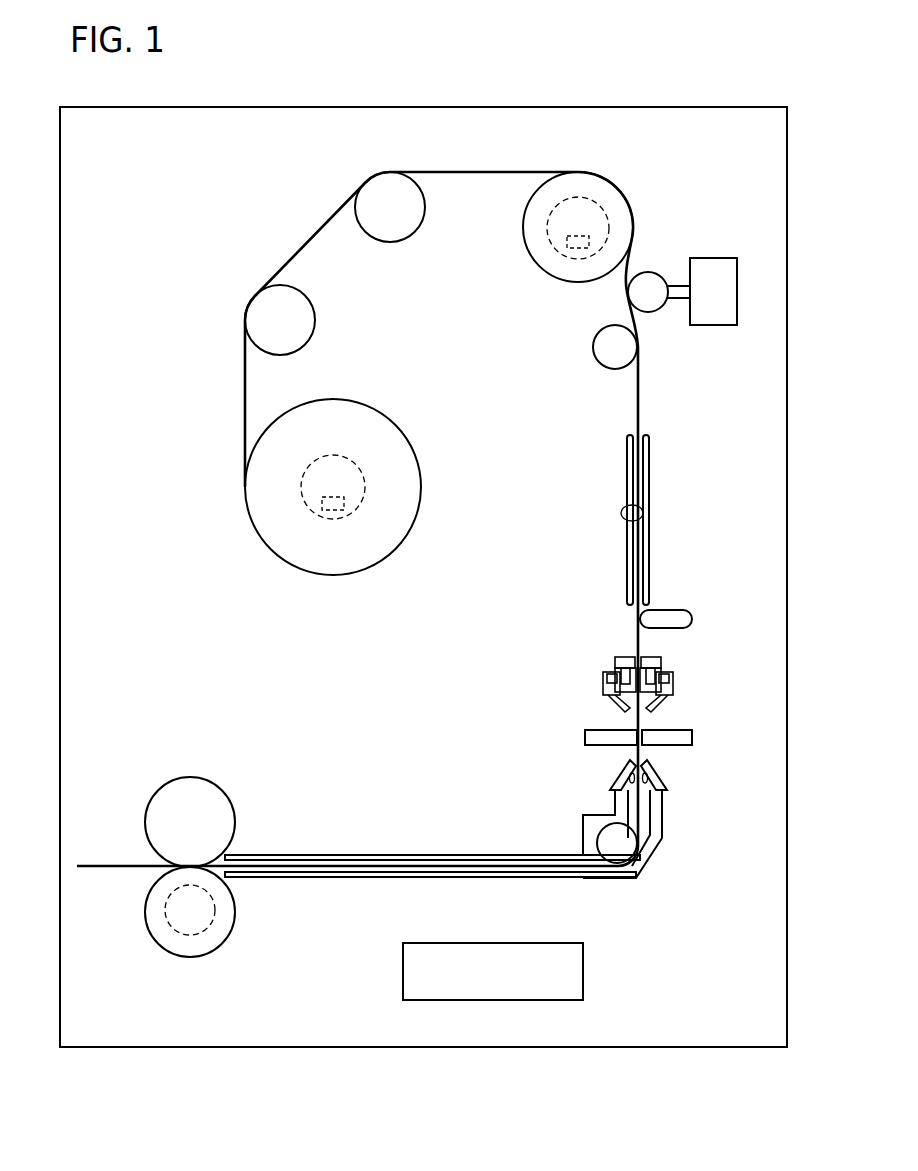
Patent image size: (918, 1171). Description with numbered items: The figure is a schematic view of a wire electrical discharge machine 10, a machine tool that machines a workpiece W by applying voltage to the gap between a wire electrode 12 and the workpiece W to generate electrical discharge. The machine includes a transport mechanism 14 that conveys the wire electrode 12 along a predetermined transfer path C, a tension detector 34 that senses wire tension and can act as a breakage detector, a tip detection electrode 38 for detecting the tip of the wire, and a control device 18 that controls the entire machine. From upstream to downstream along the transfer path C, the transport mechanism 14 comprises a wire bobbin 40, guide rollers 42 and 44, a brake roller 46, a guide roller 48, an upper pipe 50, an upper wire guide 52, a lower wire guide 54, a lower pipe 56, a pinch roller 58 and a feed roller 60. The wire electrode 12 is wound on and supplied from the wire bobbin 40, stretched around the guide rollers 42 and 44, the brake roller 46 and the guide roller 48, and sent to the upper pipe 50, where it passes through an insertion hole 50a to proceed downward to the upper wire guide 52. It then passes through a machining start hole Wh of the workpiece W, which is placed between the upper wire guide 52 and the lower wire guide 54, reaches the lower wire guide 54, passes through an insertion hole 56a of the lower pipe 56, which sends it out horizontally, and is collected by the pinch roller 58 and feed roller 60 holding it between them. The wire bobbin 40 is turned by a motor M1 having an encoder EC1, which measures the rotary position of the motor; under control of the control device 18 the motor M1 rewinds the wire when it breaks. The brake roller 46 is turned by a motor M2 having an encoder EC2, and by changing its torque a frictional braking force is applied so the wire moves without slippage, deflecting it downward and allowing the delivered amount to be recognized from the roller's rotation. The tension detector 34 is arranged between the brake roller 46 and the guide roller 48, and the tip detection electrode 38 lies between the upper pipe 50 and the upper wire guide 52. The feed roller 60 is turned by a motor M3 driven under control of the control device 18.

The wire electrical discharge machine 10 is at (308, 92).
The wire electrode 12 is at (310, 235).
The transport mechanism 14 is at (420, 519).
The control device 18 is at (539, 942).
The tension detector 34 is at (713, 256).
The tip detection electrode 38 is at (676, 611).
The wire bobbin 40 is at (389, 540).
The guide roller 42 is at (298, 318).
The guide roller 44 is at (390, 222).
The brake roller 46 is at (563, 268).
The guide roller 48 is at (593, 347).
The upper pipe 50 is at (651, 466).
The insertion hole 50a is at (642, 507).
The upper wire guide 52 is at (606, 661).
The lower wire guide 54 is at (600, 803).
The lower pipe 56 is at (352, 855).
The insertion hole 56a is at (305, 875).
The pinch roller 58 is at (205, 780).
The feed roller 60 is at (190, 957).
The transfer path C is at (493, 150).
The motor M1 is at (307, 507).
The motor M2 is at (548, 222).
The motor M3 is at (213, 920).
The encoder EC1 is at (331, 512).
The encoder EC2 is at (550, 245).
The workpiece W is at (693, 737).
The machining start hole Wh is at (636, 738).